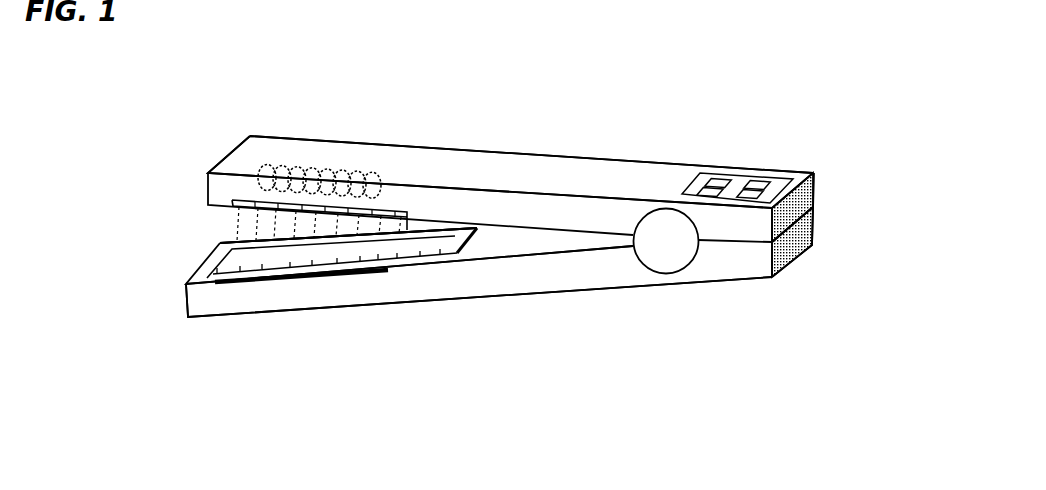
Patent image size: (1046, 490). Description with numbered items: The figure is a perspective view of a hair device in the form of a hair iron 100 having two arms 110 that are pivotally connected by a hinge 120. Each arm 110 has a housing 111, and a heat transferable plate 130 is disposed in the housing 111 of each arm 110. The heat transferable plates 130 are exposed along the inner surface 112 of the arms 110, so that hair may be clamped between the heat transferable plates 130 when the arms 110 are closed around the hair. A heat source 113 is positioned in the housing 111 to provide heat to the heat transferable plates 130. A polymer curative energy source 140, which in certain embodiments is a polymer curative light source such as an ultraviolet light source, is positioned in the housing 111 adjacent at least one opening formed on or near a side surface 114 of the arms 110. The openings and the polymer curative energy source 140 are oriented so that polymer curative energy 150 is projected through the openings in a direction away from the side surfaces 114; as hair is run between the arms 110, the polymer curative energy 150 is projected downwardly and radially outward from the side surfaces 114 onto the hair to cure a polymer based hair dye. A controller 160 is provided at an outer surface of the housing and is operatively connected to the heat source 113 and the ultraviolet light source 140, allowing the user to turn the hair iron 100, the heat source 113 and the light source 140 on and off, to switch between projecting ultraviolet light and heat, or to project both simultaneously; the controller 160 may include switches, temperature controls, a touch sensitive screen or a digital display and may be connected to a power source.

The hair iron 100 is at (777, 95).
The arm 110 is at (445, 128).
The housing 111 is at (490, 178).
The inner surface 112 is at (513, 242).
The heat source 113 is at (304, 167).
The side surface 114 is at (503, 267).
The hinge 120 is at (667, 230).
The heat transferable plate 130 is at (250, 256).
The polymer curative energy source 140 is at (332, 285).
The polymer curative energy 150 is at (233, 218).
The controller 160 is at (755, 182).